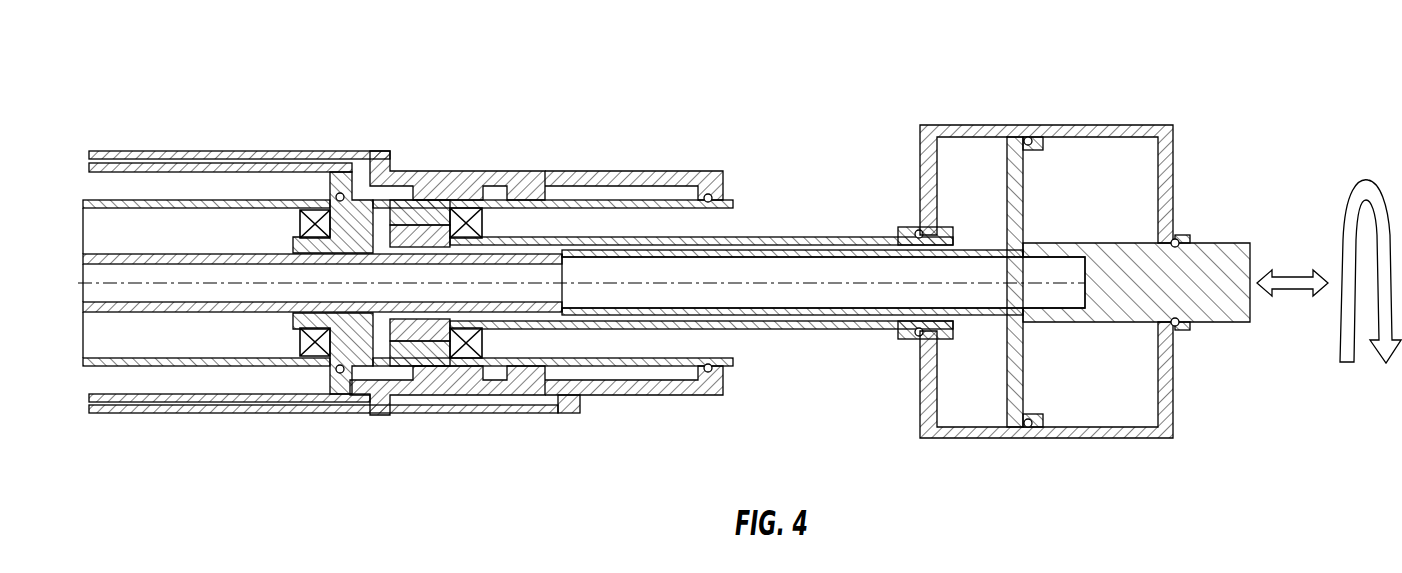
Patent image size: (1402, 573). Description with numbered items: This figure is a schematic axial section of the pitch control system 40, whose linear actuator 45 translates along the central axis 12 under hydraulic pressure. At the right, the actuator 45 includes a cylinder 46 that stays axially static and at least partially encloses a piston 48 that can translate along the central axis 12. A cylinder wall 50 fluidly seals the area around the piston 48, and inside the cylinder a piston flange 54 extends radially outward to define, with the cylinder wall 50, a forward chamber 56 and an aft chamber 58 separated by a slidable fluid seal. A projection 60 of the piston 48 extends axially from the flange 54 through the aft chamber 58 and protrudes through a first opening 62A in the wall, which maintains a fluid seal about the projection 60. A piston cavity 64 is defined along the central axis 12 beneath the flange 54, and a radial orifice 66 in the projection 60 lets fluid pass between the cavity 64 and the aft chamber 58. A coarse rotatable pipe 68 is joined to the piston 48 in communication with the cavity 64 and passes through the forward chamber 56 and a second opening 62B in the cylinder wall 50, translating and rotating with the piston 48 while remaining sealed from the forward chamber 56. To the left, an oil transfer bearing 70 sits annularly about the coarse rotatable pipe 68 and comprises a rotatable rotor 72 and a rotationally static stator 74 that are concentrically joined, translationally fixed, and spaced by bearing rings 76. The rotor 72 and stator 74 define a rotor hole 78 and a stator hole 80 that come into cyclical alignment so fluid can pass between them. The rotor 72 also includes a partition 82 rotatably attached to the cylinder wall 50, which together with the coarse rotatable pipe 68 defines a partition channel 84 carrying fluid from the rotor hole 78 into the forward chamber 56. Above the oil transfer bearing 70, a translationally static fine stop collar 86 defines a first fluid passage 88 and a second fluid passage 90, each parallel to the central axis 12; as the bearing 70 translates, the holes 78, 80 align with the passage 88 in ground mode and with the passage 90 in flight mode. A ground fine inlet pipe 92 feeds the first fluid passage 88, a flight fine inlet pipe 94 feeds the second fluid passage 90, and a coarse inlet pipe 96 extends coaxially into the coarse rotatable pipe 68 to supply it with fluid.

The central axis 12 is at (567, 283).
The pitch control system 40 is at (575, 125).
The linear actuator 45 is at (1029, 222).
The cylinder 46 is at (940, 125).
The cylinder wall 50 is at (1046, 380).
The piston 48 is at (1130, 243).
The piston flange 54 is at (1025, 382).
The forward chamber 56 is at (978, 402).
The aft chamber 58 is at (1103, 403).
The projection 60 is at (1225, 243).
The first opening 62A is at (1190, 326).
The second opening 62B is at (900, 338).
The piston cavity 64 is at (1073, 273).
The radial orifice 66 is at (1062, 330).
The coarse rotatable pipe 68 is at (972, 325).
The oil transfer bearing 70 is at (100, 195).
The rotatable rotor 72 is at (290, 245).
The stator 74 is at (213, 366).
The bearing rings 76 is at (483, 222).
The rotor hole 78 is at (413, 332).
The stator hole 80 is at (343, 366).
The partition 82 is at (790, 237).
The partition channel 84 is at (847, 252).
The fine stop collar 86 is at (625, 395).
The first fluid passage 88 is at (415, 192).
The second fluid passage 90 is at (635, 192).
The ground fine inlet pipe 92 is at (253, 150).
The flight fine inlet pipe 94 is at (142, 413).
The coarse inlet pipe 96 is at (118, 312).